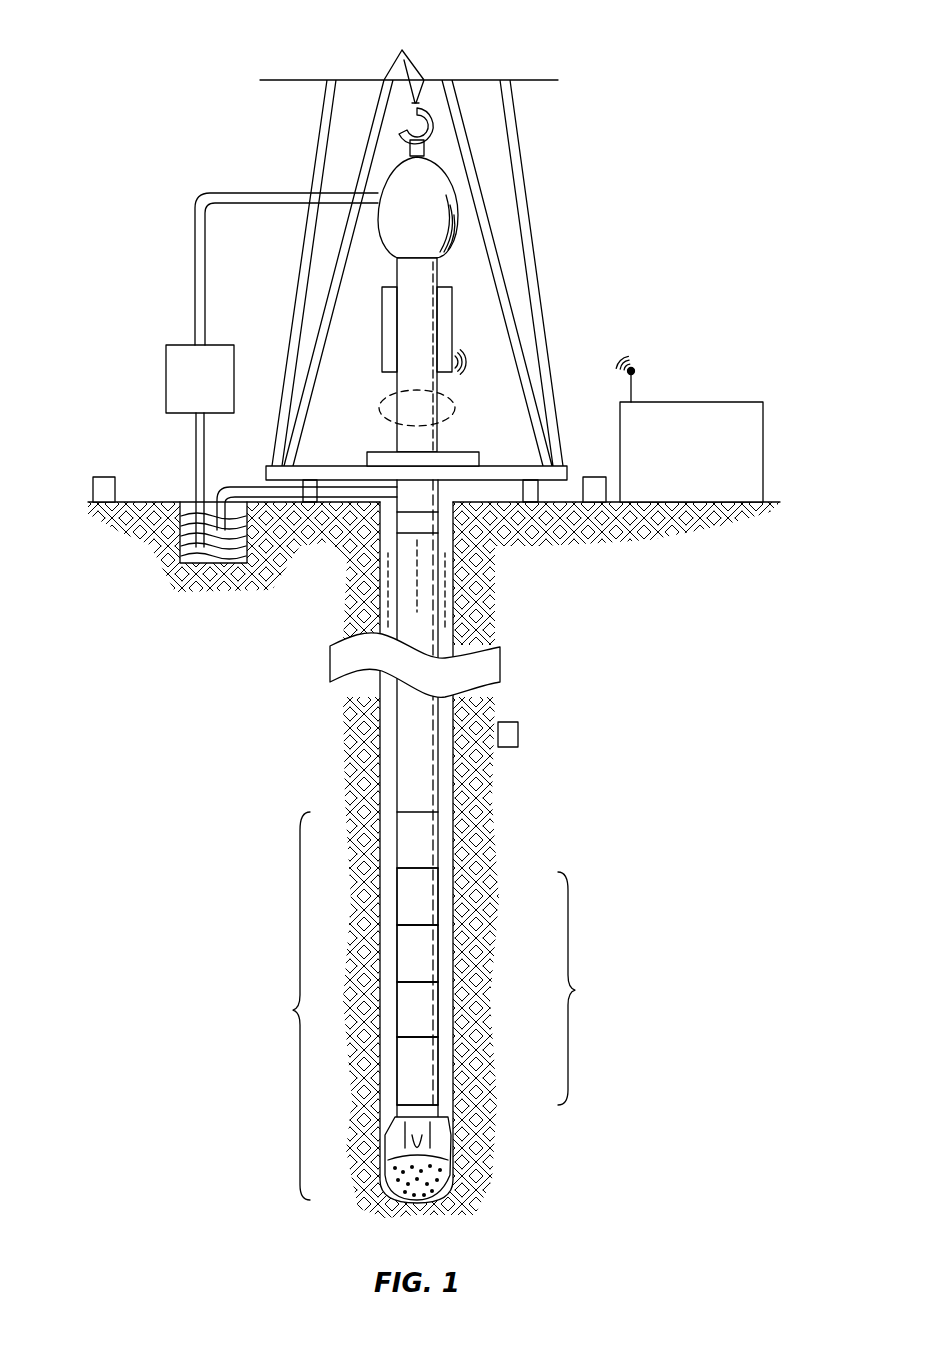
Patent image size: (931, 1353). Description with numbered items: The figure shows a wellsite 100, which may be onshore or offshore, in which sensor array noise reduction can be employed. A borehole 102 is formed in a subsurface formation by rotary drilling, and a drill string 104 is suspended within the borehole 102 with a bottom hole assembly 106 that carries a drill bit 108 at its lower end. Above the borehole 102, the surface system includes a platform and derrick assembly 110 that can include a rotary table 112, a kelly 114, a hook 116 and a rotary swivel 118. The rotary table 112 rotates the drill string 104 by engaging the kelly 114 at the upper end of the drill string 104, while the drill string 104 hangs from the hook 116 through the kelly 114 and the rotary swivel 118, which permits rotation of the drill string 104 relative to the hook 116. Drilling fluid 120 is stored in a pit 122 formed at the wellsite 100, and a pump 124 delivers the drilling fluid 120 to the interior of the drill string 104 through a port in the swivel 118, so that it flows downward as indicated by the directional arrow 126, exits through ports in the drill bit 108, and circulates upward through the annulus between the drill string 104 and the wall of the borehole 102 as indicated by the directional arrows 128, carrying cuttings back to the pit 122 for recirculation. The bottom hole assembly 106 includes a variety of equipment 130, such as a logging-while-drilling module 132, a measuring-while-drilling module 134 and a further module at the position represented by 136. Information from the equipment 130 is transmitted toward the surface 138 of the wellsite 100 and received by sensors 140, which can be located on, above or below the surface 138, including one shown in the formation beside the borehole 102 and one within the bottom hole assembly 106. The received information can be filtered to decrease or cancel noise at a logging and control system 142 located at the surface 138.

The wellsite 100 is at (652, 48).
The borehole 102 is at (460, 538).
The drill string 104 is at (416, 498).
The bottom hole assembly 106 is at (372, 957).
The drill bit 108 is at (434, 1152).
The platform and derrick assembly 110 is at (547, 166).
The rotary table 112 is at (460, 458).
The kelly 114 is at (398, 445).
The hook 116 is at (414, 108).
The rotary swivel 118 is at (390, 232).
The drilling fluid 120 is at (212, 556).
The pit 122 is at (187, 502).
The pump 124 is at (180, 413).
The directional arrow 126 is at (417, 587).
The directional arrows 128 is at (388, 568).
The equipment 130 is at (515, 798).
The logging-while-drilling module 132 is at (430, 896).
The measuring-while-drilling module 134 is at (430, 953).
The additional LWD and/or MWD module 136 is at (430, 1010).
The surface 138 is at (775, 494).
The sensors 140 is at (93, 490).
The logging and control system 142 is at (692, 402).